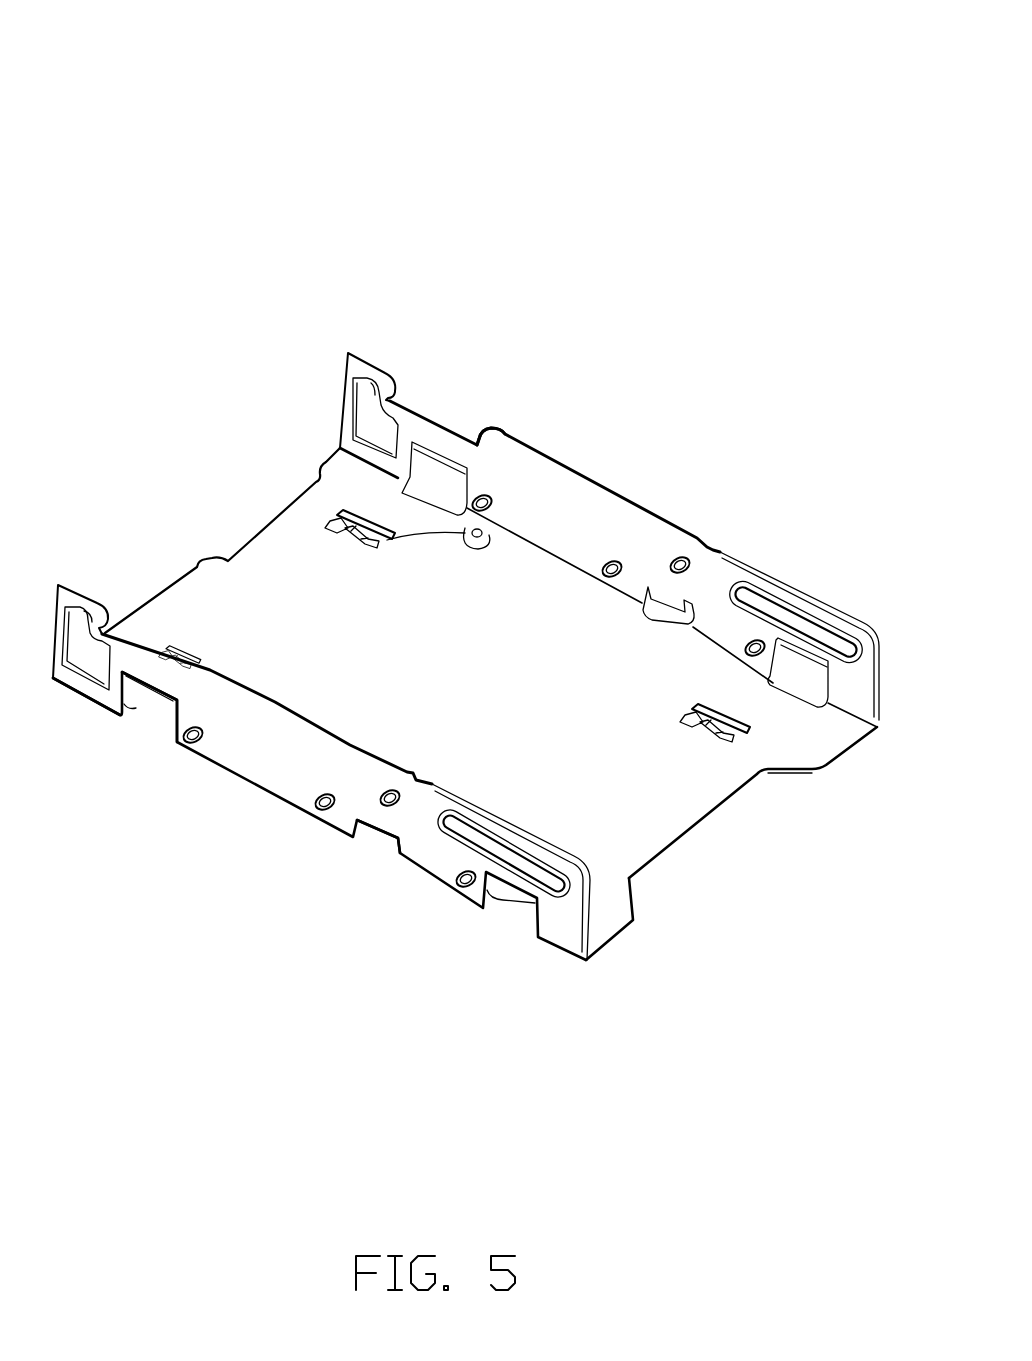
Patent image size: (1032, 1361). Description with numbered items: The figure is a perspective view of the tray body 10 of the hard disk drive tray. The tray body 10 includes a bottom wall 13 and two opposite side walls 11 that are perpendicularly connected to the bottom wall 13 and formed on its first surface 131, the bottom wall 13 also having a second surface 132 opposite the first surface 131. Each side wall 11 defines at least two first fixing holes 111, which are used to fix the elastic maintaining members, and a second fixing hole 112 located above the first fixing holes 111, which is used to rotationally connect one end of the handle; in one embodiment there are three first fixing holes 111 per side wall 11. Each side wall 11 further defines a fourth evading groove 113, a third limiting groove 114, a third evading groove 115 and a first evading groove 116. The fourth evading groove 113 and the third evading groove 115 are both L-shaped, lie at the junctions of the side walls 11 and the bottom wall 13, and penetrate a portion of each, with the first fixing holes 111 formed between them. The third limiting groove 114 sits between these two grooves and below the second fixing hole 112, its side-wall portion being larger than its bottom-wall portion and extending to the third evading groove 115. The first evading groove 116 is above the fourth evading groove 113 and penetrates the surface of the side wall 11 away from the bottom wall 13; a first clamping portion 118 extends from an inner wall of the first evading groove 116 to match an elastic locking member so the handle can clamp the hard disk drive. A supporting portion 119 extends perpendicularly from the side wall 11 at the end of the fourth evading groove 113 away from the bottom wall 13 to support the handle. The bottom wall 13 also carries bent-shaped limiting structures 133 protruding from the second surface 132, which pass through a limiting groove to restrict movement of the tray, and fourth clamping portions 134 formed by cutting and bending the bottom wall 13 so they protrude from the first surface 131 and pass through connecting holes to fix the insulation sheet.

The tray body 10 is at (492, 85).
The side wall 11 is at (510, 457).
The first fixing hole 111 is at (493, 502).
The second fixing hole 112 is at (392, 820).
The fourth evading groove 113 is at (135, 733).
The third limiting groove 114 is at (362, 861).
The third evading groove 115 is at (796, 653).
The first evading groove 116 is at (451, 405).
The first clamping portion 118 is at (95, 606).
The supporting portion 119 is at (426, 440).
The bottom wall 13 is at (708, 790).
The first surface 131 is at (624, 848).
The second surface 132 is at (700, 860).
The limiting structure 133 is at (732, 735).
The fourth clamping portion 134 is at (333, 515).